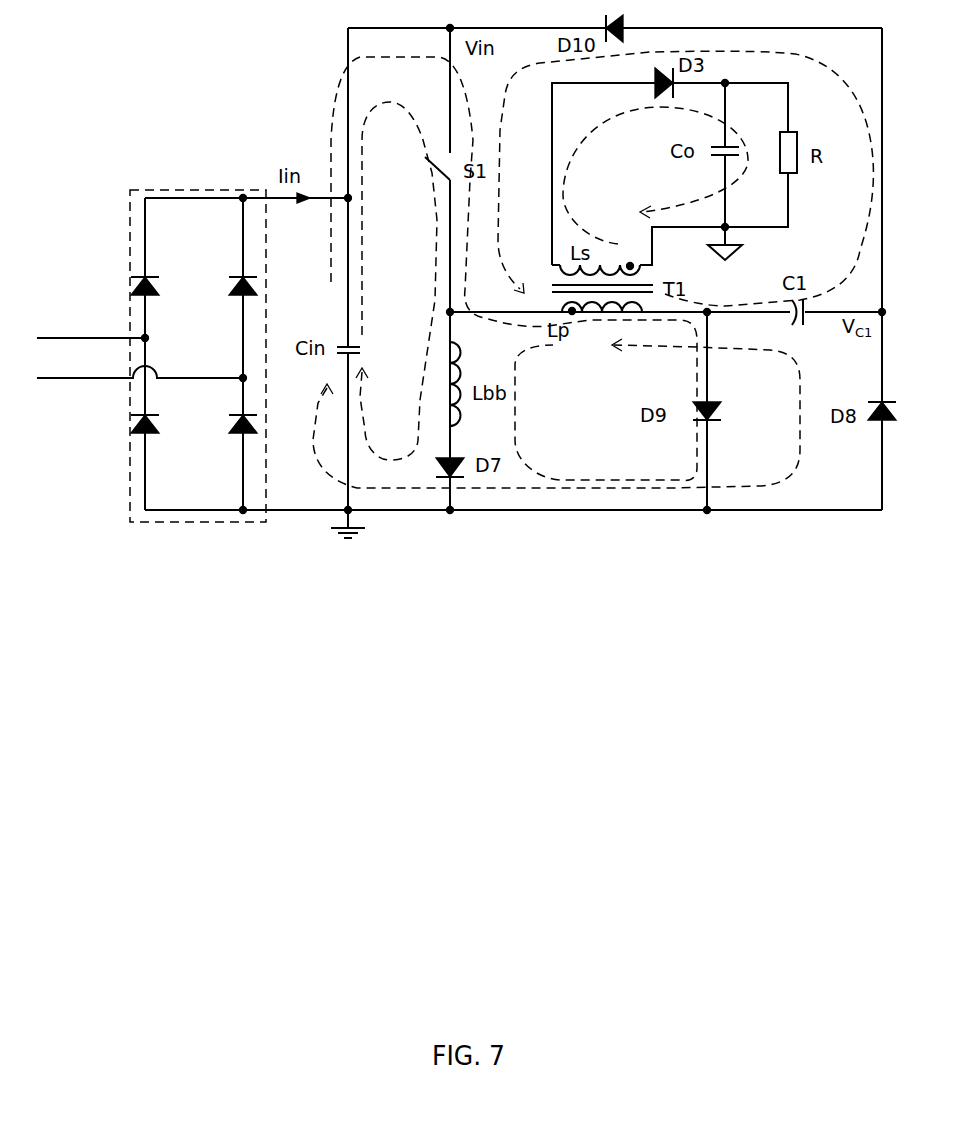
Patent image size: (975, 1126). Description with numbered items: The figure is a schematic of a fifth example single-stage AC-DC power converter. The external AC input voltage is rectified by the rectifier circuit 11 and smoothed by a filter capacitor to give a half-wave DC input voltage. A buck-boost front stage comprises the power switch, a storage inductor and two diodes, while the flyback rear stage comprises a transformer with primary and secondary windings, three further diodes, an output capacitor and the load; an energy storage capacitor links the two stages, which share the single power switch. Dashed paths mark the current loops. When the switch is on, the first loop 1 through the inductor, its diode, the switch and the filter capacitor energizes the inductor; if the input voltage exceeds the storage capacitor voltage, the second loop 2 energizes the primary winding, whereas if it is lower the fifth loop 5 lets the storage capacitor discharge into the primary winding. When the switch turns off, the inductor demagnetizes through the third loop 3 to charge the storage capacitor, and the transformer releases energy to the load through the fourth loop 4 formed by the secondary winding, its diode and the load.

The rectifier circuit 11 is at (266, 244).
The first loop 1 is at (396, 281).
The second loop 2 is at (545, 272).
The third loop 3 is at (606, 400).
The fourth loop 4 is at (655, 175).
The fifth loop 5 is at (685, 178).